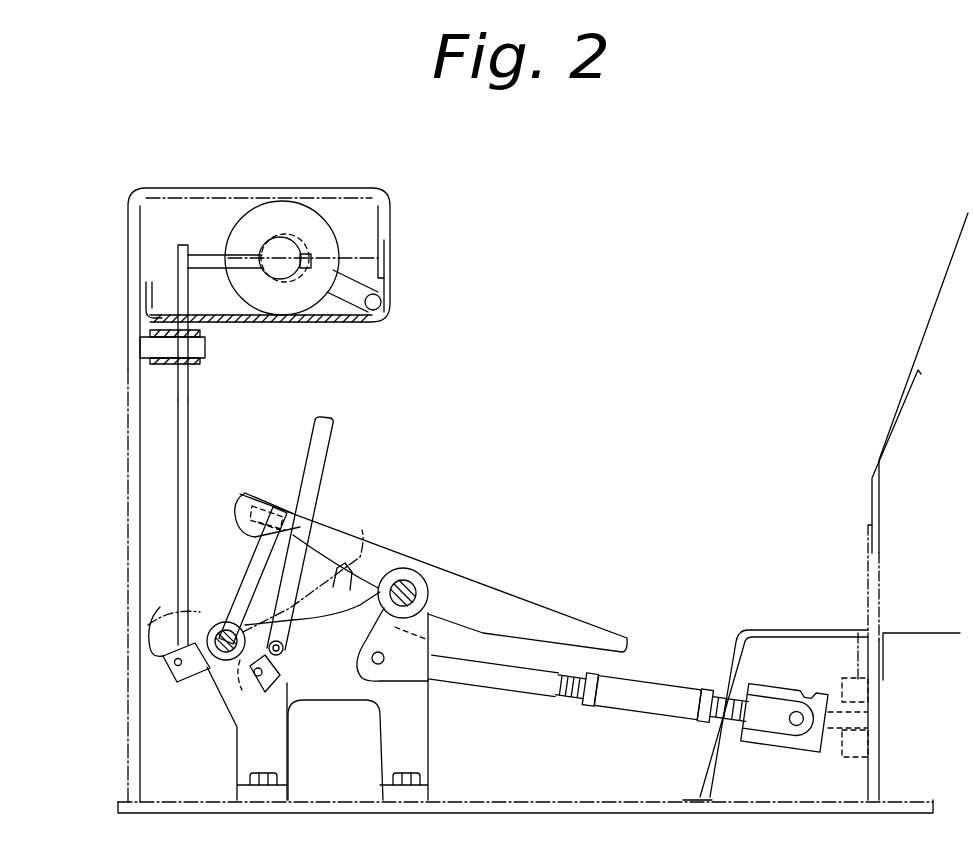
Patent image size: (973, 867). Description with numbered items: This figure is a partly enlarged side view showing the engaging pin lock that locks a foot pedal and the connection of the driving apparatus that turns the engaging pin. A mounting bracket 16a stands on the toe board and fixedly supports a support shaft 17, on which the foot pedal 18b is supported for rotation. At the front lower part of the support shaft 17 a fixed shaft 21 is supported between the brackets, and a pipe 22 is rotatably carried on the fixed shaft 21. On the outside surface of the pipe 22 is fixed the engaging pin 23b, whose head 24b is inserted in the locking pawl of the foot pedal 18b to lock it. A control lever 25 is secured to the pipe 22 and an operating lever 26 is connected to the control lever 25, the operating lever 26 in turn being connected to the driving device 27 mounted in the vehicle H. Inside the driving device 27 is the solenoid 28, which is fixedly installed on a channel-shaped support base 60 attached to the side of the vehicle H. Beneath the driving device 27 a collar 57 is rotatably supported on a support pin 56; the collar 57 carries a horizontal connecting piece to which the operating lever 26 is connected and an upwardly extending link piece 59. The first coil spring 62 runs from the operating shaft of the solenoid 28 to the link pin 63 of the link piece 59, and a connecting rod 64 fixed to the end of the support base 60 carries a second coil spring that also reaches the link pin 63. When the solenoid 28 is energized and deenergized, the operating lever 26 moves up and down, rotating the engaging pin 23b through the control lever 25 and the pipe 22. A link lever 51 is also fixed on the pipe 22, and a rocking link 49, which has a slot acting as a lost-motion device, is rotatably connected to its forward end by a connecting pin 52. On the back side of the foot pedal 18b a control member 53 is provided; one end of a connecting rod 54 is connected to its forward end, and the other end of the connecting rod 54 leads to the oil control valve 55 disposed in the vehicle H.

The driving device 27 is at (338, 213).
The solenoid 28 is at (245, 237).
The link piece 59 is at (176, 255).
The first coil spring 62 is at (312, 252).
The link pin 63 is at (222, 270).
The support pin 56 is at (205, 345).
The collar 57 is at (190, 363).
The support base 60 is at (318, 322).
The connecting rod 64 is at (358, 314).
The operating lever 26 is at (190, 423).
The head of engaging pin 24b is at (273, 500).
The rocking link 49 is at (322, 473).
The support shaft 17 is at (413, 575).
The foot pedal 18b is at (540, 610).
The engaging pin 23b is at (253, 562).
The control lever 25 is at (157, 612).
The pipe 22 is at (215, 622).
The fixed shaft 21 is at (210, 675).
The link lever 51 is at (262, 698).
The connecting pin 52 is at (282, 680).
The control member 53 is at (428, 643).
The mounting bracket 16a is at (420, 746).
The connecting rod 54 is at (641, 702).
The oil control valve 55 is at (912, 633).
The vehicle H is at (944, 290).